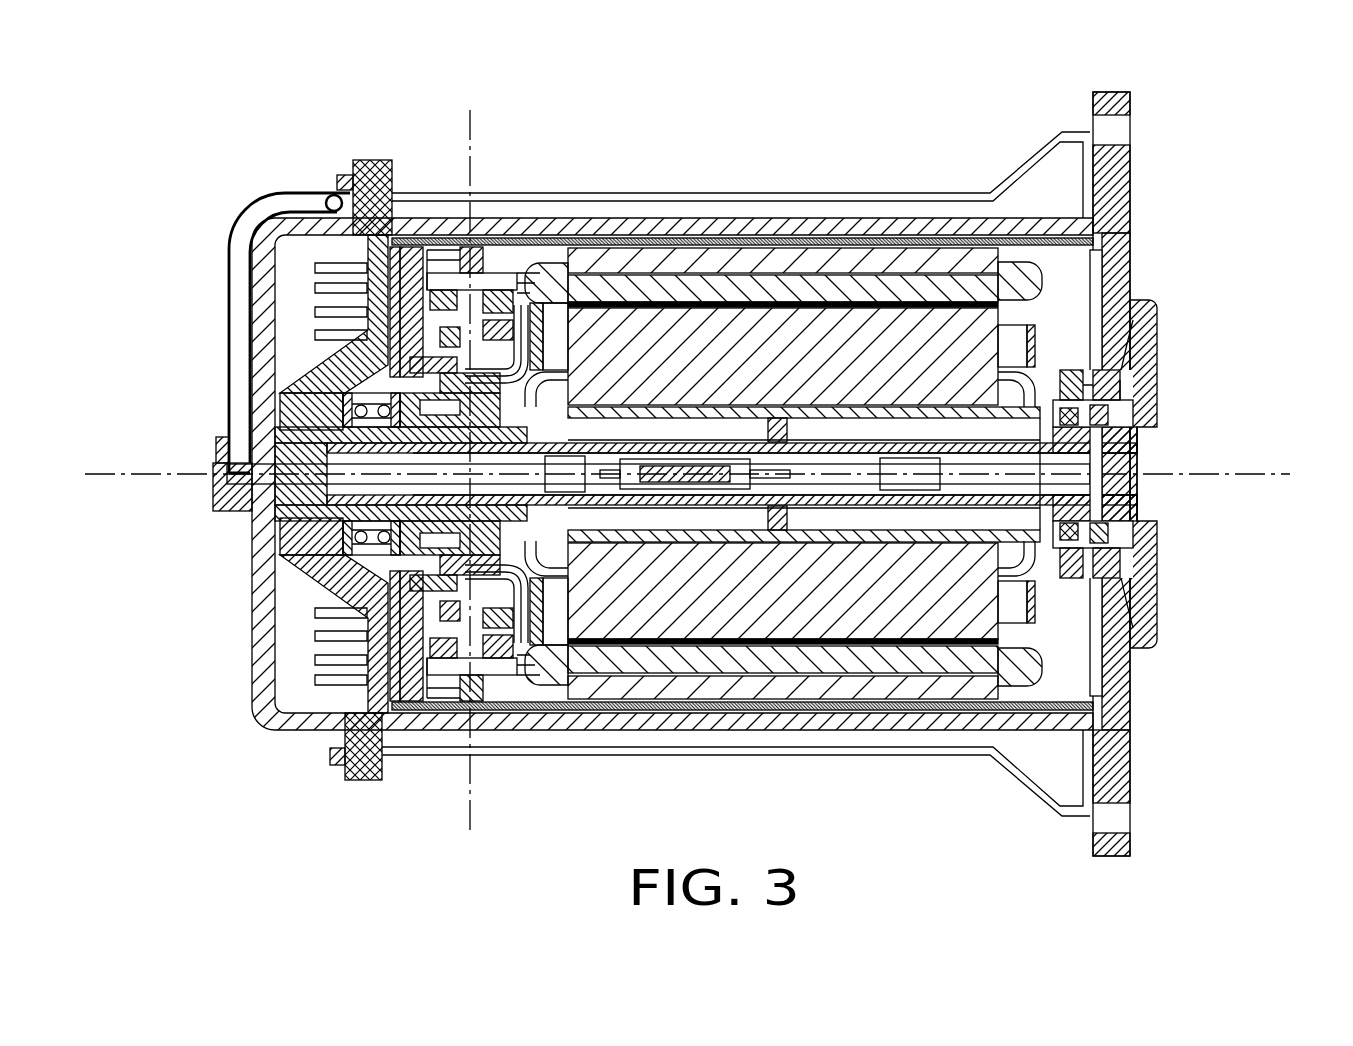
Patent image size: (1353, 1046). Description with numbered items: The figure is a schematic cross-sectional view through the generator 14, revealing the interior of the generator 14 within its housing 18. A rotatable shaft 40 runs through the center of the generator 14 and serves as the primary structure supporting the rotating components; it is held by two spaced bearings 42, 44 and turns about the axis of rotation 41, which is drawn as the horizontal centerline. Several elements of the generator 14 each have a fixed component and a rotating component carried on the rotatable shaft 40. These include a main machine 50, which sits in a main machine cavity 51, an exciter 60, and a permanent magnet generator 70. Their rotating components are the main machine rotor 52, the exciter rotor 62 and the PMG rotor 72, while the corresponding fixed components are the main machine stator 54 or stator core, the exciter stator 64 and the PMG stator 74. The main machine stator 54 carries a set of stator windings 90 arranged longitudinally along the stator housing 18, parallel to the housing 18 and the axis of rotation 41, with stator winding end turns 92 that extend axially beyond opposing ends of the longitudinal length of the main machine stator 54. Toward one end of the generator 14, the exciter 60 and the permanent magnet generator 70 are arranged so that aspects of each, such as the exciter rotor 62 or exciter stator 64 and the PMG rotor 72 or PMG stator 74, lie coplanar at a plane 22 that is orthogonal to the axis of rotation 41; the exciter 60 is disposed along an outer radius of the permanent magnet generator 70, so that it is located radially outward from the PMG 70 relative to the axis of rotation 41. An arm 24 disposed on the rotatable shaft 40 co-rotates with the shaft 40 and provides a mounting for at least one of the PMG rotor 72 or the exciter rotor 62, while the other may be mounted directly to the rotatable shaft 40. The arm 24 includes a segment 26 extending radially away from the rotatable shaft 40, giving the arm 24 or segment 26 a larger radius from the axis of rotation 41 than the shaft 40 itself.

The generator 14 is at (568, 152).
The housing 18 is at (690, 216).
The plane 22 is at (457, 795).
The arm 24 is at (532, 612).
The segment 26 is at (585, 625).
The rotatable shaft 40 is at (1148, 414).
The axis of rotation 41 is at (1228, 478).
The bearing 42 is at (400, 518).
The bearing 44 is at (1122, 544).
The main machine 50 is at (808, 232).
The main machine cavity 51 is at (1050, 302).
The main machine rotor 52 is at (970, 332).
The main machine stator 54 is at (975, 262).
The exciter 60 is at (453, 398).
The exciter rotor 62 is at (505, 333).
The exciter stator 64 is at (452, 268).
The permanent magnet generator 70 is at (440, 605).
The PMG rotor 72 is at (410, 358).
The PMG stator 74 is at (443, 538).
The stator windings 90 is at (880, 282).
The stator winding end turns 92 is at (1045, 272).